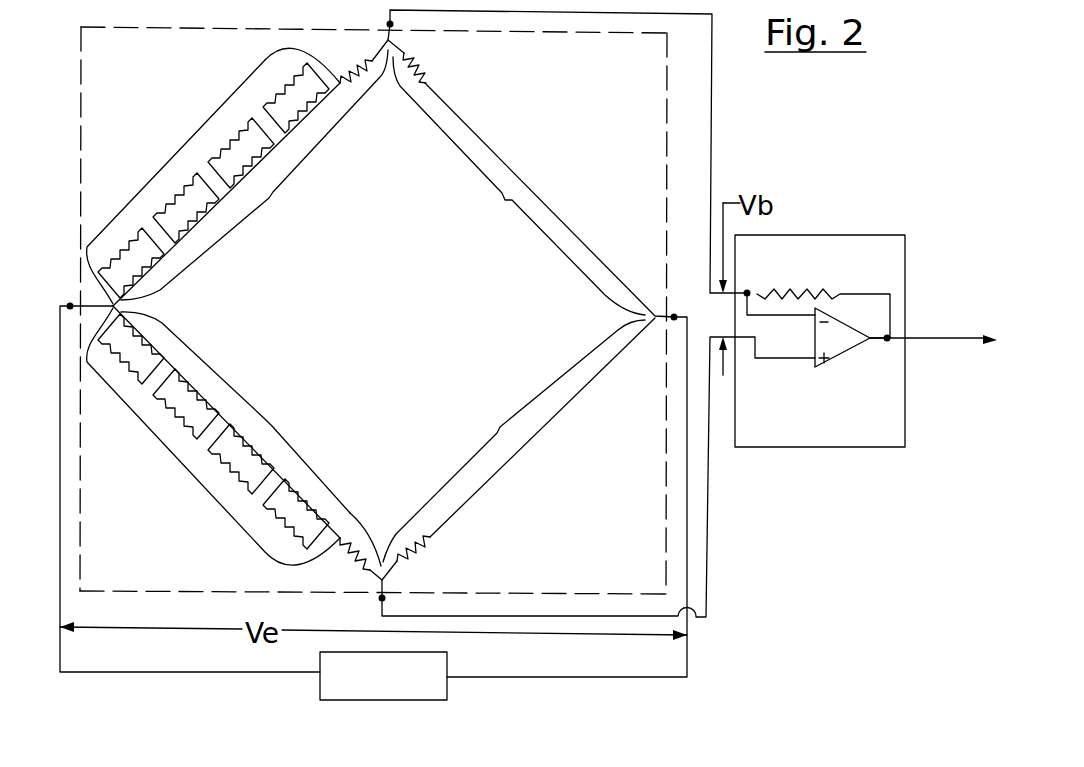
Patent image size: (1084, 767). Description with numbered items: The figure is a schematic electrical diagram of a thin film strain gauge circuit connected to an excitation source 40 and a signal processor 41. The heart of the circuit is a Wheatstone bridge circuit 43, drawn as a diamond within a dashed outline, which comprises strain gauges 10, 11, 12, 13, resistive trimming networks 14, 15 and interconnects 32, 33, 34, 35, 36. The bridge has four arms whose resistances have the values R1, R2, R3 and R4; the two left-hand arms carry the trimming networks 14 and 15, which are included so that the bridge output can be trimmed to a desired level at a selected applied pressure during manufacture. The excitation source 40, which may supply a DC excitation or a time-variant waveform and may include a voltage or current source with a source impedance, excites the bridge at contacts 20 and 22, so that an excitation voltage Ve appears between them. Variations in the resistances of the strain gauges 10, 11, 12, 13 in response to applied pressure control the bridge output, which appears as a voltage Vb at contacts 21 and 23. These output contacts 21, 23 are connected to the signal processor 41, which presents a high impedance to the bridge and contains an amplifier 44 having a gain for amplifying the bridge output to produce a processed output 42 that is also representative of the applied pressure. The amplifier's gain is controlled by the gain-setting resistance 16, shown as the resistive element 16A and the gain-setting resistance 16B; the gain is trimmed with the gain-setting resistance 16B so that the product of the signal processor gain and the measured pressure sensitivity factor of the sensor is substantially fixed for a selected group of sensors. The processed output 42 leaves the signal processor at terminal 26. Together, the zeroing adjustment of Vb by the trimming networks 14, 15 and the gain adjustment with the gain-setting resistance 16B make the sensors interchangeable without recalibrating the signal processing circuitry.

The strain gauge 10 is at (372, 58).
The strain gauge 11 is at (428, 82).
The strain gauge 12 is at (364, 565).
The strain gauge 13 is at (418, 548).
The resistive trimming network 14 is at (213, 168).
The resistive trimming network 15 is at (196, 466).
The gain-setting resistance 16 is at (825, 315).
The feedback resistor 16A is at (843, 290).
The gain-setting resistance 16B is at (777, 296).
The contact 20 is at (70, 302).
The contact 21 is at (378, 598).
The contact 22 is at (673, 312).
The contact 23 is at (388, 24).
The output terminal 26 is at (890, 335).
The interconnect 32 is at (299, 51).
The interconnect 33 is at (404, 52).
The interconnect 34 is at (346, 521).
The interconnect 35 is at (379, 579).
The interconnect 36 is at (551, 211).
The excitation source 40 is at (320, 688).
The signal processor 41 is at (820, 234).
The processed output 42 is at (927, 341).
The Wheatstone bridge circuit 43 is at (80, 90).
The amplifier 44 is at (856, 350).
The bridge arm resistance R1 is at (500, 427).
The bridge arm resistance R2 is at (533, 187).
The bridge arm resistance R3 is at (273, 193).
The bridge arm resistance R4 is at (247, 436).